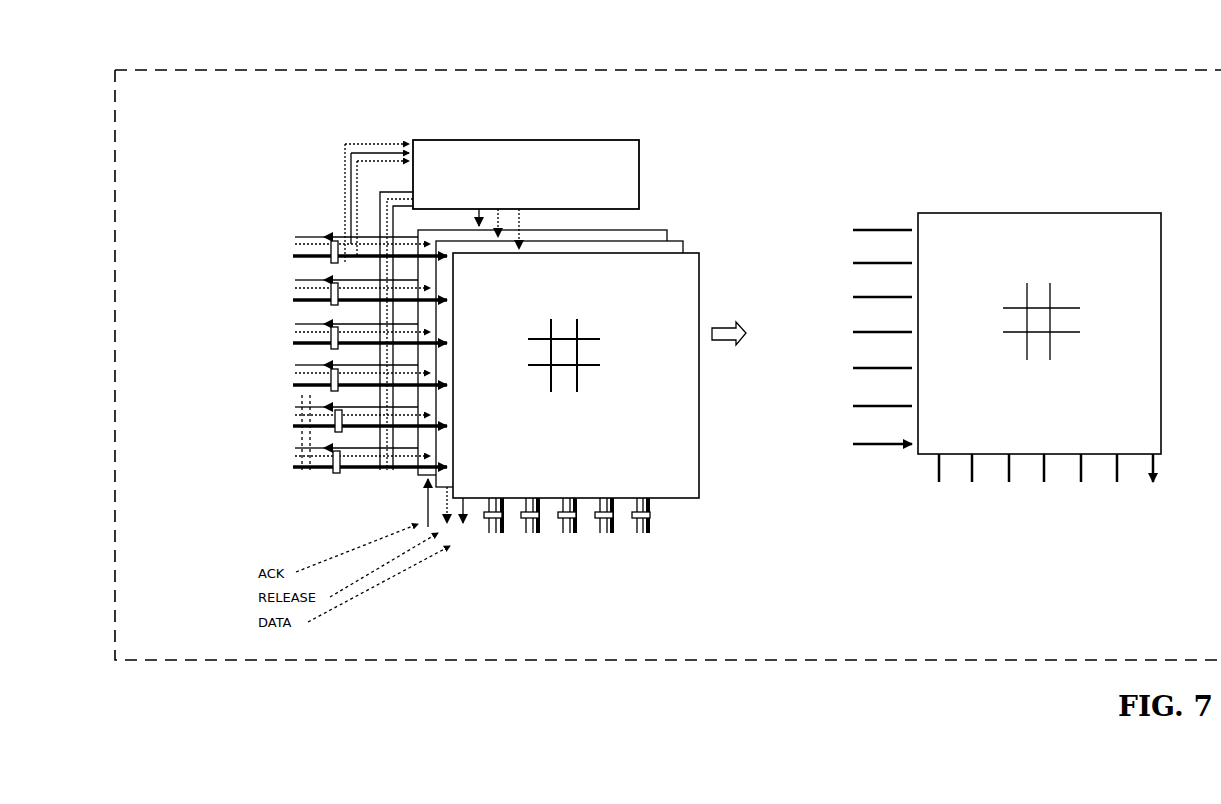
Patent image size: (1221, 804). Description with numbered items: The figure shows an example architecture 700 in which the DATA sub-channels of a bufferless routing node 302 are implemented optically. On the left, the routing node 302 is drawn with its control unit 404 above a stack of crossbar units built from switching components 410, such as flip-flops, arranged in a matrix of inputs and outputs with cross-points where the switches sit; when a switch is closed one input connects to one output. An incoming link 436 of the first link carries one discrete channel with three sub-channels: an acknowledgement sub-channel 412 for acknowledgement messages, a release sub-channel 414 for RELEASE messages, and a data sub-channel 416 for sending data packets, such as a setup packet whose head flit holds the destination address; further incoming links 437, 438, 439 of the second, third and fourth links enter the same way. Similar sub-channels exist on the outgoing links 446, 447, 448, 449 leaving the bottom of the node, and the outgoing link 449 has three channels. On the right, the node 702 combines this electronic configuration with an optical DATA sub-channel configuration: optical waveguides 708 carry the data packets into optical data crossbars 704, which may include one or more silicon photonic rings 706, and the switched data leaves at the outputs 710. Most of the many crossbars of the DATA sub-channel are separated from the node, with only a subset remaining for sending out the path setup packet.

The routing node 302 is at (345, 82).
The crossbar system 700 is at (672, 70).
The control unit 404 is at (597, 138).
The incoming link 436 is at (358, 214).
The acknowledgement sub-channel 412 is at (306, 226).
The release sub-channel 414 is at (290, 240).
The data sub-channel 416 is at (284, 253).
The incoming link 437 is at (352, 292).
The incoming link 438 is at (352, 336).
The incoming link 439 is at (352, 420).
The switching component 410 is at (330, 480).
The outgoing link 446 is at (424, 514).
The outgoing link 447 is at (498, 527).
The output port 448 is at (536, 527).
The outgoing link 449 is at (608, 527).
The routing node 702 is at (978, 158).
The optical data crossbars 704 is at (1062, 270).
The silicon photonic rings 706 is at (1079, 316).
The optical waveguides 708 is at (872, 212).
The optical data outputs 710 is at (932, 508).